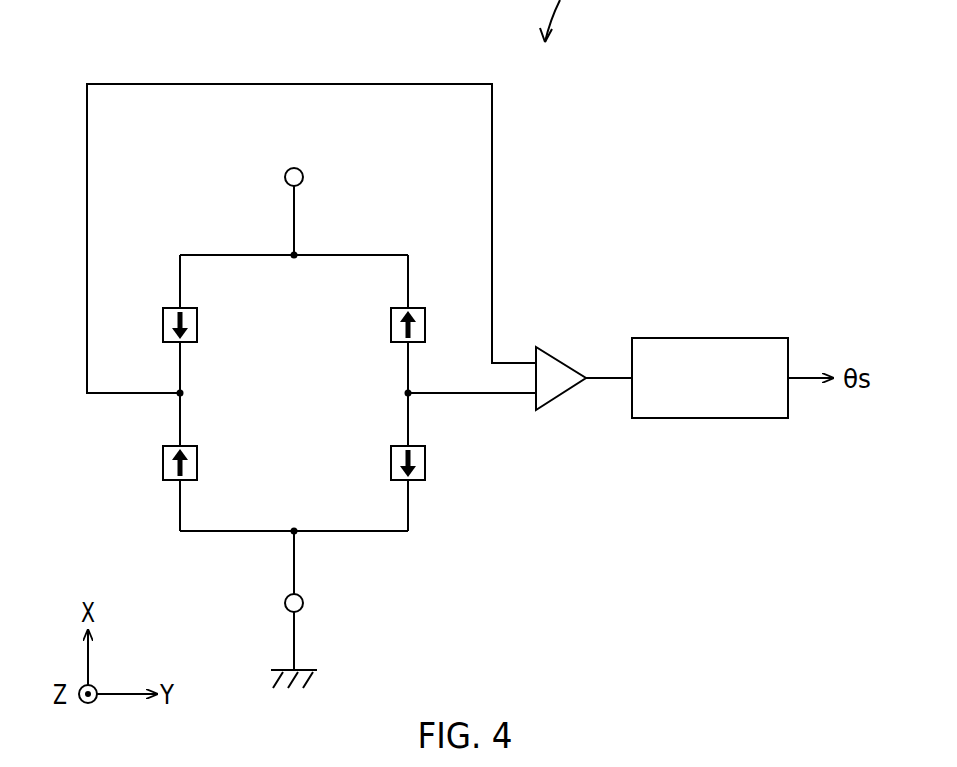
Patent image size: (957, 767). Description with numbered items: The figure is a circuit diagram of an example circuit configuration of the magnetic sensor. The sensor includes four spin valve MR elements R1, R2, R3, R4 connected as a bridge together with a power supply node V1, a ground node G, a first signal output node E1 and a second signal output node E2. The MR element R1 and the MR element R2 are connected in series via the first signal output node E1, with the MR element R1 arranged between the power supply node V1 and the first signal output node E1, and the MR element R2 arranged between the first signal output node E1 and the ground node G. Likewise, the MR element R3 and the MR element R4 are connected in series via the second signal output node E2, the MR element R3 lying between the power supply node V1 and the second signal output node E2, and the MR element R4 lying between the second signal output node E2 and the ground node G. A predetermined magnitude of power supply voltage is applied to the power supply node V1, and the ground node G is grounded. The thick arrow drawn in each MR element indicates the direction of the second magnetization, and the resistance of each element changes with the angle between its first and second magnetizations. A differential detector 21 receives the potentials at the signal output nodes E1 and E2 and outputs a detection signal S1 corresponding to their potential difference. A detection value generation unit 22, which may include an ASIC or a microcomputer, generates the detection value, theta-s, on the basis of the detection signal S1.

The differential detector 21 is at (553, 346).
The detection value generation unit 22 is at (728, 338).
The MR element R1 is at (172, 307).
The MR element R2 is at (170, 481).
The MR element R3 is at (415, 307).
The MR element R4 is at (418, 481).
The first signal output node E1 is at (178, 398).
The second signal output node E2 is at (410, 398).
The power supply node V1 is at (294, 168).
The ground node G is at (303, 603).
The detection signal S1 is at (605, 360).